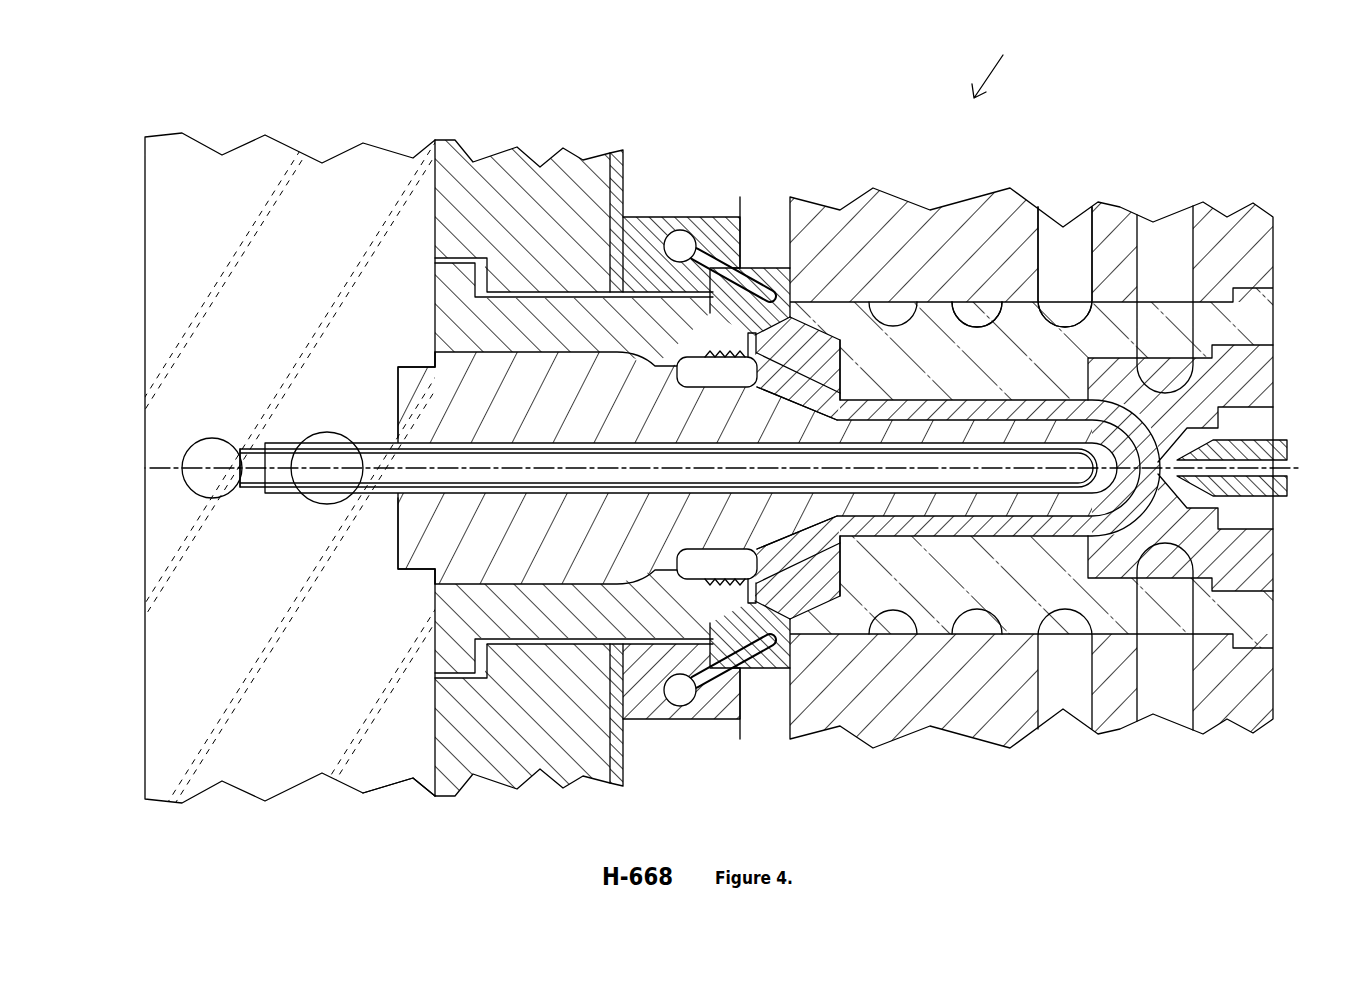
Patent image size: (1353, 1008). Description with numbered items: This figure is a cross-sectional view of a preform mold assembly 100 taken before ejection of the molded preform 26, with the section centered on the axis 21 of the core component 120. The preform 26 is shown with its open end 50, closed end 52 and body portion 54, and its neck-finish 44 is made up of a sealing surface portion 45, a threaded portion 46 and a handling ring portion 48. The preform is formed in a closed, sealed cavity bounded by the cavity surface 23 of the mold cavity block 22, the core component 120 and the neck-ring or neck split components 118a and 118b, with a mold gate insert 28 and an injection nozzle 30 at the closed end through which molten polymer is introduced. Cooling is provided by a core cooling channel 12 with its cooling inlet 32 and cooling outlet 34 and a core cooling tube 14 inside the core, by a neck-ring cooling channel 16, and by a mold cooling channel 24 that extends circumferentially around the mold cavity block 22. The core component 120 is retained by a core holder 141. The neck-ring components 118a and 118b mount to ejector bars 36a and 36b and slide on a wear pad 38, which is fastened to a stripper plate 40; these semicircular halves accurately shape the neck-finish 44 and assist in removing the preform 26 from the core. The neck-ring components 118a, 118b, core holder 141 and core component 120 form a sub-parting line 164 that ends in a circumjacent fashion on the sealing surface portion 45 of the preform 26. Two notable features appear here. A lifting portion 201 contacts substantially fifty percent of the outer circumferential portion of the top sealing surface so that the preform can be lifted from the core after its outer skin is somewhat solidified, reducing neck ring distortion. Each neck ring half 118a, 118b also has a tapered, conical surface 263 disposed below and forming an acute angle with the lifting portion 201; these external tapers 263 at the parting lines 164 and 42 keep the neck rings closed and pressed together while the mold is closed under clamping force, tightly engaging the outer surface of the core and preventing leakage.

The preform mold assembly 100 is at (725, 247).
The core cooling channel 12 is at (255, 462).
The core cooling tube 14 is at (380, 452).
The neck-ring cooling channel 16 is at (752, 330).
The axis 21 is at (170, 473).
The mold cavity block 22 is at (1027, 333).
The cavity surface 23 is at (860, 407).
The mold cooling channel 24 is at (1070, 245).
The preform 26 is at (820, 390).
The mold gate insert 28 is at (1250, 368).
The injection nozzle 30 is at (1267, 452).
The cooling inlet 32 is at (205, 460).
The cooling outlet 34 is at (322, 440).
The ejector bar 36a is at (660, 707).
The ejector bar 36b is at (645, 245).
The wear pad 38 is at (612, 755).
The stripper plate 40 is at (505, 183).
The parting line 42 is at (873, 607).
The neck-finish 44 is at (746, 622).
The sealing surface portion 45 is at (567, 372).
The threaded portion 46 is at (575, 690).
The handling ring portion 48 is at (830, 620).
The open end 50 is at (680, 558).
The closed end 52 is at (1138, 503).
The body portion 54 is at (963, 525).
The neck-ring component 118a is at (780, 600).
The neck-ring component 118b is at (770, 360).
The core component 120 is at (420, 360).
The core holder 141 is at (517, 335).
The sub-parting line 164 is at (706, 230).
The lifting portion 201 is at (548, 822).
The tapered conical surface 263 is at (675, 572).